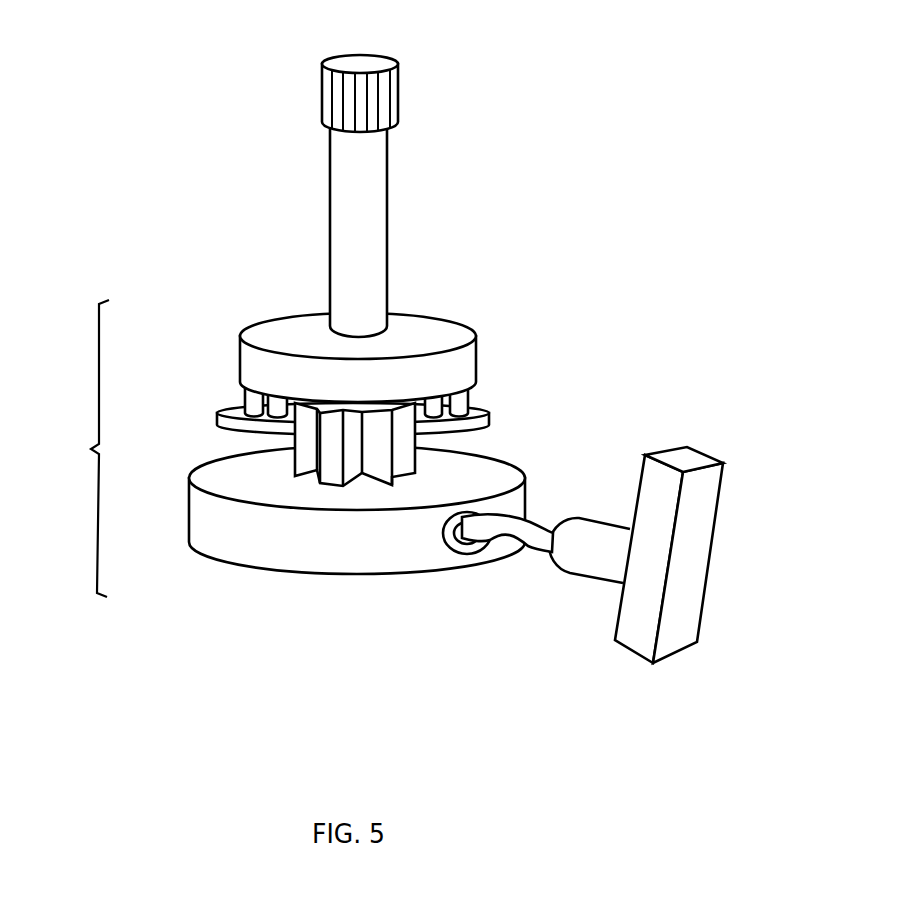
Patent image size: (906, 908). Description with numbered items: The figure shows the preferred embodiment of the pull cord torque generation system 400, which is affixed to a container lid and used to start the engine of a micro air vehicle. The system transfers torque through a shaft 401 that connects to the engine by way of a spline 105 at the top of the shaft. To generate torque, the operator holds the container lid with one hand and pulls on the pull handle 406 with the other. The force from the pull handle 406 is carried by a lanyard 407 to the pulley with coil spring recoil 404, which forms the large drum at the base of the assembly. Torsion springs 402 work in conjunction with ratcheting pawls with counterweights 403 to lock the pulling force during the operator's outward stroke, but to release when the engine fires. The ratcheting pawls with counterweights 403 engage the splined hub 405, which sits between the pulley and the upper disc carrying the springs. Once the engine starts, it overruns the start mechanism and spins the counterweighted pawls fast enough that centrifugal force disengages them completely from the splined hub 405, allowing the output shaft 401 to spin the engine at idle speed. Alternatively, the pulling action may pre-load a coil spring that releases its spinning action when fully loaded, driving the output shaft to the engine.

The spline 105 is at (330, 98).
The torque generation system 400 is at (74, 448).
The shaft 401 is at (370, 230).
The torsion springs 402 is at (466, 392).
The ratcheting pawls with counterweights 403 is at (493, 417).
The pulley with coil spring recoil 404 is at (338, 538).
The splined hub 405 is at (305, 447).
The pull handle 406 is at (685, 545).
The lanyard 407 is at (535, 532).